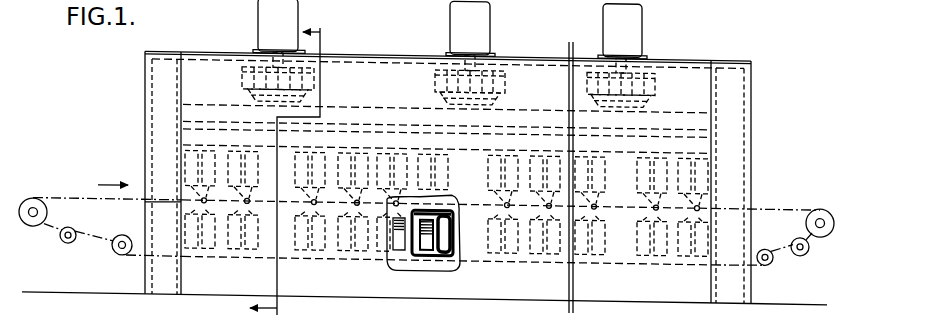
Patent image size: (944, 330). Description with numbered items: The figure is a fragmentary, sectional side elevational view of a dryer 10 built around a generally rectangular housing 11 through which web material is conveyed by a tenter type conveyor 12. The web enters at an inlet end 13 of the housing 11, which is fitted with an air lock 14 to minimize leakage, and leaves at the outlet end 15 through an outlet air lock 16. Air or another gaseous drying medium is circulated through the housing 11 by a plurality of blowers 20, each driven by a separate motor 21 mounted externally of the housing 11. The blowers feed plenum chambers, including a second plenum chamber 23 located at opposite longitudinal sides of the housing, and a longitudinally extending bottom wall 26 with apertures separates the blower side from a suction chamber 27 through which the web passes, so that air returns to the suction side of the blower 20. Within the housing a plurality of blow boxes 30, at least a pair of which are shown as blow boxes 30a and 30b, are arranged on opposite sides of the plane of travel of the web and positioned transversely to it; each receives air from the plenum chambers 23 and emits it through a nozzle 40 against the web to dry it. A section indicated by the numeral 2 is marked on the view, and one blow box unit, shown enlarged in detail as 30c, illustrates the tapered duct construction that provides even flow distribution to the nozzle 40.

The section line 2- 2 is at (411, 172).
The dryer 10 is at (424, 154).
The housing 11 is at (533, 47).
The tenter type conveyor 12 is at (66, 195).
The inlet end 13 is at (145, 200).
The air lock 14 is at (171, 64).
The outlet end 15 is at (752, 200).
The outlet air lock 16 is at (740, 113).
The blowers 20 is at (242, 82).
The motors 21 is at (290, 24).
The second plenum chamber 23 is at (421, 245).
The bottom wall 26 is at (335, 102).
The suction chamber 27 is at (447, 253).
The blow boxes 30 is at (446, 200).
The blow box 30a is at (191, 245).
The blow box 30b is at (210, 147).
The treating element detail 30c is at (443, 288).
The nozzle 40 is at (690, 195).